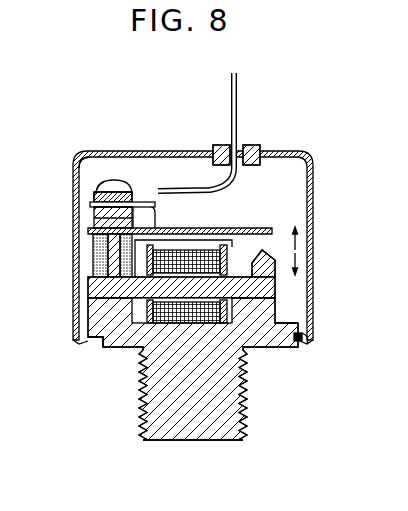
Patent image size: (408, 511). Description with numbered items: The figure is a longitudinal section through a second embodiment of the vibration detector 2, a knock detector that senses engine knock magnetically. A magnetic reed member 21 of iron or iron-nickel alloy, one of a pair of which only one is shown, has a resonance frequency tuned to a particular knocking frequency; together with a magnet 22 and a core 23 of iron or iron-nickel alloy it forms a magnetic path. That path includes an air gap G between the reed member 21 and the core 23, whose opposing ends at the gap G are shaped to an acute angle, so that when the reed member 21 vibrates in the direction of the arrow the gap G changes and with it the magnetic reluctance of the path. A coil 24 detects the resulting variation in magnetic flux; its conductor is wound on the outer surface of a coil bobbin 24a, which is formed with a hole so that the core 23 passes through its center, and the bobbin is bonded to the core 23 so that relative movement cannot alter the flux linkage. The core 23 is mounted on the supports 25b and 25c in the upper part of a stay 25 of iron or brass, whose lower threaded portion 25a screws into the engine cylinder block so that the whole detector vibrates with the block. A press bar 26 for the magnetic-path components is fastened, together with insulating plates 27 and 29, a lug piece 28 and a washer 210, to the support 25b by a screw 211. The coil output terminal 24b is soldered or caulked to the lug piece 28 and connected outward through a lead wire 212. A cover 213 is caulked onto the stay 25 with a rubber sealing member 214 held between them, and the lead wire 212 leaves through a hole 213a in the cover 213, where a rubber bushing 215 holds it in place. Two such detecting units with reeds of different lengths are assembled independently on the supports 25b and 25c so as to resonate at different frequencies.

The vibration detector 2 is at (51, 319).
The magnetic reed member 21 is at (181, 218).
The magnet 22 is at (78, 257).
The core 23 is at (239, 271).
The coil 24 is at (193, 358).
The coil bobbin 24a is at (115, 379).
The coil output terminal 24b is at (174, 218).
The stay 25 is at (206, 456).
The threaded portion 25a is at (267, 413).
The support 25b is at (87, 358).
The support 25c is at (317, 322).
The press bar 26 is at (78, 232).
The insulating plate 27 is at (78, 209).
The lug piece 28 is at (67, 139).
The insulating plate 29 is at (131, 184).
The washer 210 is at (122, 151).
The screw 211 is at (125, 155).
The lead wire 212 is at (222, 132).
The cover 213 is at (219, 247).
The hole 213a is at (274, 137).
The sealing member 214 is at (321, 352).
The rubber bushing 215 is at (201, 134).
The air gap G is at (263, 239).